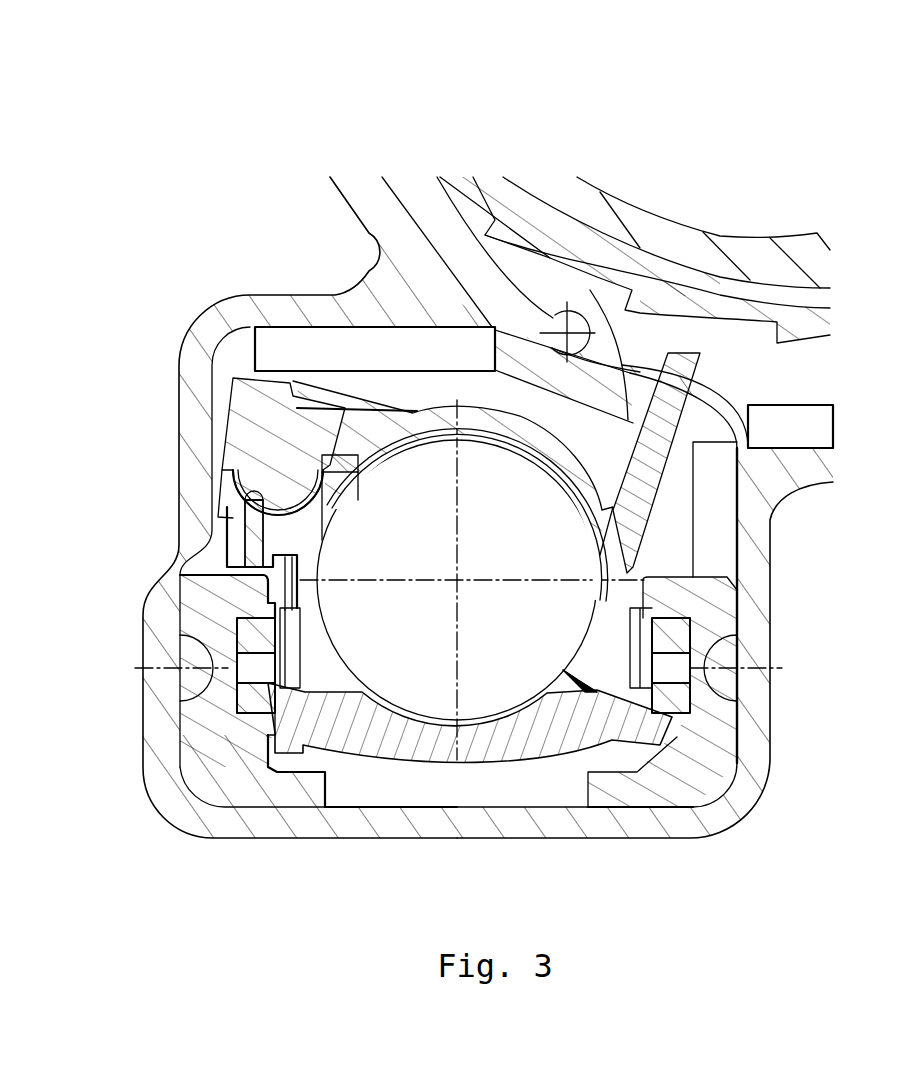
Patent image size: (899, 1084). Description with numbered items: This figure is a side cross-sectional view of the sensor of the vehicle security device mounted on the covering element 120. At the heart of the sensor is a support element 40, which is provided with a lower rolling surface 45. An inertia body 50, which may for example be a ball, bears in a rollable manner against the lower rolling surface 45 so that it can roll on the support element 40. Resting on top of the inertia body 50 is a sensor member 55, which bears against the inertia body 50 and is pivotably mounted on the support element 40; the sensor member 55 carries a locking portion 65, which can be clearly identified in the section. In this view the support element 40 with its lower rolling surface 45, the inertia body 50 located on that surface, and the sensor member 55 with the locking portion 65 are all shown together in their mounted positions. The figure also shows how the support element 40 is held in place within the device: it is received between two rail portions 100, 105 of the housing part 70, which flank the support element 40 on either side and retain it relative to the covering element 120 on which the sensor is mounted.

The support element 40 is at (512, 745).
The lower rolling surface 45 is at (578, 680).
The inertia body 50 is at (352, 565).
The sensor member 55 is at (575, 472).
The locking portion 65 is at (678, 378).
The housing part 70 is at (203, 607).
The rail portion 100 is at (203, 740).
The rail portion 105 is at (708, 740).
The covering element 120 is at (757, 503).